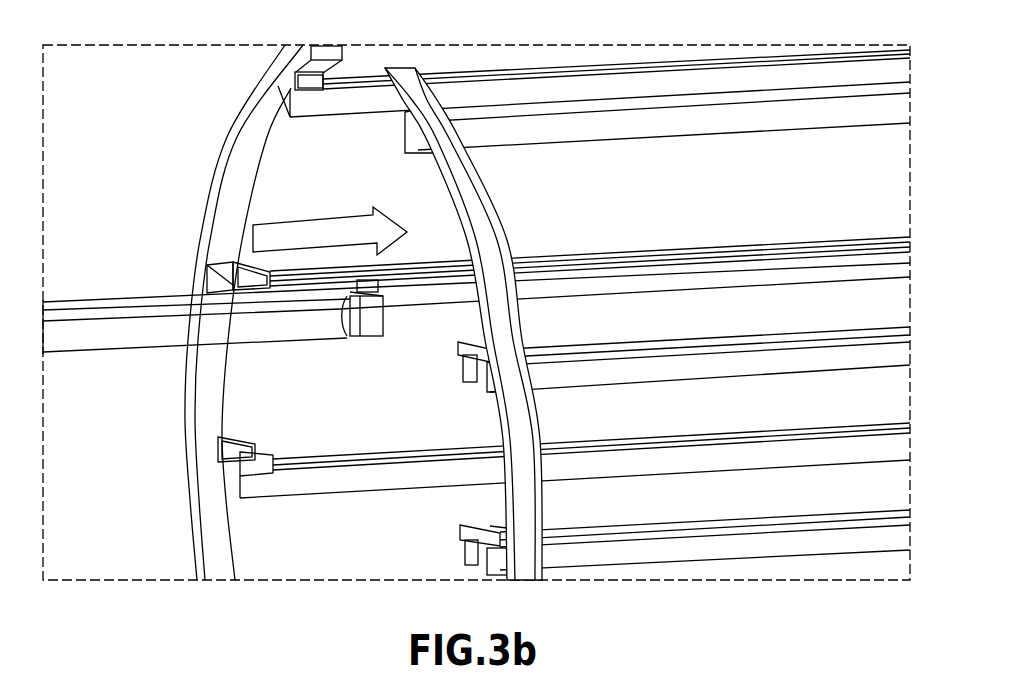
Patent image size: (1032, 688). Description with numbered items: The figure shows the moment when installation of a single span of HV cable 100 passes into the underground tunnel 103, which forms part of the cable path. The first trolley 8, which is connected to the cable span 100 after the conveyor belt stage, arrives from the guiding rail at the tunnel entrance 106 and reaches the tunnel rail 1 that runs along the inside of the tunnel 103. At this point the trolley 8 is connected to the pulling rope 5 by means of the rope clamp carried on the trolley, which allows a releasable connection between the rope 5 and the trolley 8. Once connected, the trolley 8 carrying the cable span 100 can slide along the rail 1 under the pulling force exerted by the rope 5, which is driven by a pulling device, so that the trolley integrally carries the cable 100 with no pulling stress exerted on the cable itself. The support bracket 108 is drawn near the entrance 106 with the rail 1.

The tunnel rail 1 is at (782, 280).
The rope 5 is at (609, 274).
The trolley 8 is at (353, 297).
The HV cable 100 is at (105, 340).
The tunnel 103 is at (715, 163).
The tunnel entrance 106 is at (317, 170).
The support bracket 108 is at (293, 320).